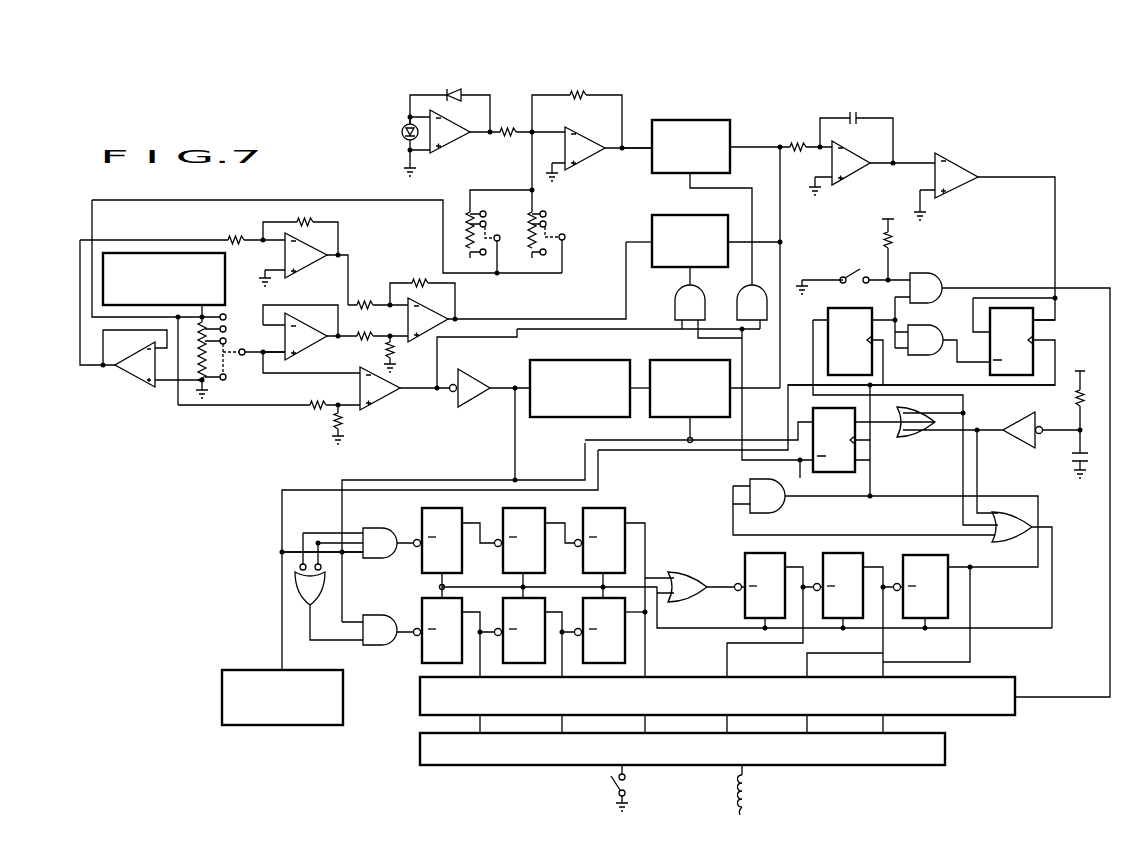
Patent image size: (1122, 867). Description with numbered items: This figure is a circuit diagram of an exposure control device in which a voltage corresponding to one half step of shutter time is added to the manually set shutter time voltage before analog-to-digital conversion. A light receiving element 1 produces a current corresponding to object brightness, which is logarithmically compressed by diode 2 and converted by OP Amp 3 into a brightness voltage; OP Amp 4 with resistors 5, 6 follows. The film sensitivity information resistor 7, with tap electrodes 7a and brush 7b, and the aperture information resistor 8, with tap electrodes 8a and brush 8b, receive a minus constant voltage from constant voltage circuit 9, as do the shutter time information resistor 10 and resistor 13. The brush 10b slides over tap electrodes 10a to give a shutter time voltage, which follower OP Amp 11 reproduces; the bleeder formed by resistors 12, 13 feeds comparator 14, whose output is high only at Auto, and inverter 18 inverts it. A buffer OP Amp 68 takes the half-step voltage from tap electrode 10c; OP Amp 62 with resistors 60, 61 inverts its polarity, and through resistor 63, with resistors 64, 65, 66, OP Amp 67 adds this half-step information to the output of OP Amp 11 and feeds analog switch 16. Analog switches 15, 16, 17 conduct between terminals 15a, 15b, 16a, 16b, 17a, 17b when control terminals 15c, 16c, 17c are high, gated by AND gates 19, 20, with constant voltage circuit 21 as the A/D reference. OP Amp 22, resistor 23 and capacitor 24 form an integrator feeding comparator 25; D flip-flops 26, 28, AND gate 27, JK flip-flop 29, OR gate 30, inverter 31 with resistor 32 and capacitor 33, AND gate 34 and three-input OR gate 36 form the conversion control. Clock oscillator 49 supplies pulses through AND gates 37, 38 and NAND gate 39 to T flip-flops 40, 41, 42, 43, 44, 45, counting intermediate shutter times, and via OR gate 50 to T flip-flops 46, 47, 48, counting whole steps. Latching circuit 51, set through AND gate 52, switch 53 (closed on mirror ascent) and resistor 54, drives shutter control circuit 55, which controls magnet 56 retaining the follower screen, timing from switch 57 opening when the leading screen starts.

The light receiving element 1 is at (402, 132).
The logarithmic compression diode 2 is at (461, 98).
The operation amplifier 3 is at (448, 146).
The operation amplifier 4 is at (592, 161).
The resistor 5 is at (508, 129).
The resistor 6 is at (587, 100).
The film sensitivity information resistor 7 is at (461, 233).
The tap electrodes 7a is at (486, 213).
The brush 7b is at (500, 236).
The aperture information resistor 8 is at (528, 250).
The tap electrodes 8a is at (547, 213).
The brush 8b is at (565, 238).
The constant voltage circuit 9 is at (225, 278).
The shutter time information resistor 10 is at (188, 299).
The tap electrodes 10a is at (228, 331).
The brush 10b is at (242, 356).
The tap electrode 10c is at (178, 404).
The operation amplifier 11 is at (311, 348).
The resistor 12 is at (269, 395).
The resistor 13 is at (331, 424).
The comparator 14 is at (378, 403).
The analog switch 15 is at (691, 120).
The terminal a of analog switch 15a is at (651, 143).
The terminal b of analog switch 15b is at (734, 145).
The terminal c of analog switch 15c is at (690, 185).
The analog switch 16 is at (666, 216).
The terminal a of analog switch 16a is at (650, 242).
The terminal b of analog switch 16b is at (736, 222).
The terminal c of analog switch 16c is at (678, 277).
The analog switch 17 is at (701, 359).
The terminal a of analog switch 17a is at (649, 371).
The terminal b of analog switch 17b is at (738, 380).
The terminal c of analog switch 17c is at (662, 424).
The inverter 18 is at (475, 396).
The AND gate 19 is at (675, 313).
The AND gate 20 is at (738, 297).
The constant voltage circuit 21 is at (572, 423).
The operation amplifier 22 is at (849, 182).
The resistor 23 is at (796, 143).
The capacitor 24 is at (857, 111).
The comparator 25 is at (957, 166).
The D-type flip-flop 26 is at (989, 340).
The AND gate 27 is at (931, 355).
The D-type flip-flop 28 is at (841, 308).
The JK-flip-flop 29 is at (813, 408).
The OR gate 30 is at (926, 438).
The inverter 31 is at (1027, 417).
The resistor 32 is at (1084, 400).
The capacitor 33 is at (1084, 458).
The AND gate 34 is at (773, 510).
The OR gate 36 is at (1011, 542).
The AND gate 37 is at (374, 528).
The AND gate 38 is at (371, 615).
The NAND gate 39 is at (325, 599).
The T-flip-flop 40 is at (462, 567).
The T-flip-flop 41 is at (545, 567).
The T-flip-flop 42 is at (584, 518).
The T-flip-flop 43 is at (424, 597).
The T-flip-flop 44 is at (502, 608).
The T-flip-flop 45 is at (583, 610).
The T-flip-flop 46 is at (785, 554).
The T-flip-flop 47 is at (863, 553).
The T-flip-flop 48 is at (947, 555).
The clock oscillator 49 is at (343, 690).
The OR gate 50 is at (693, 579).
The latching circuit 51 is at (668, 677).
The AND gate 52 is at (932, 274).
The switch 53 is at (843, 271).
The resistor 54 is at (884, 246).
The shutter control circuit 55 is at (945, 748).
The magnet 56 is at (748, 783).
The switch 57 is at (626, 789).
The resistor 60 is at (173, 293).
The resistor 61 is at (309, 230).
The operation amplifier 62 is at (322, 262).
The resistor 63 is at (378, 295).
The resistor 64 is at (382, 348).
The resistor 65 is at (395, 355).
The resistor 66 is at (424, 291).
The operation amplifier 67 is at (427, 309).
The operation amplifier 68 is at (138, 378).